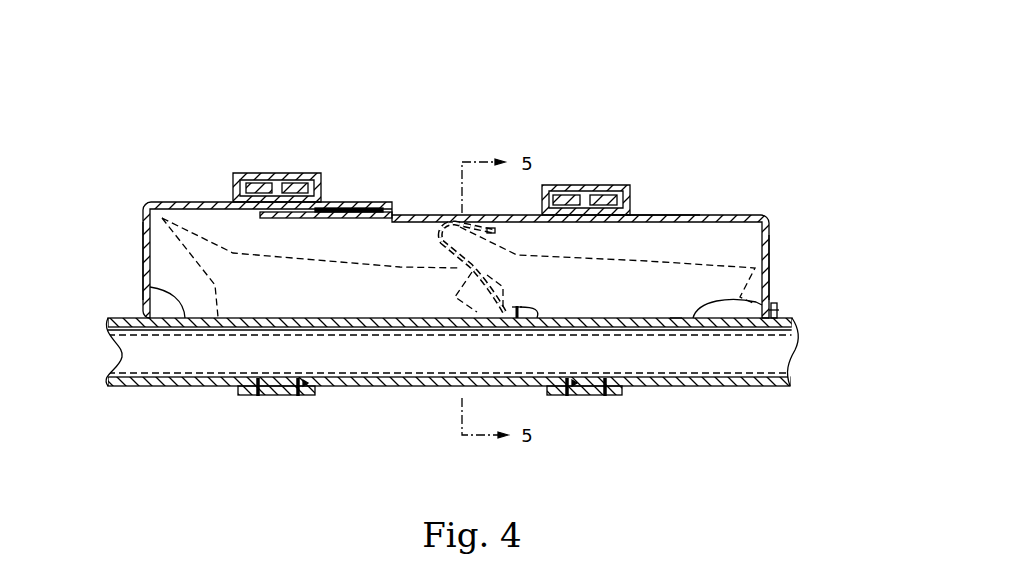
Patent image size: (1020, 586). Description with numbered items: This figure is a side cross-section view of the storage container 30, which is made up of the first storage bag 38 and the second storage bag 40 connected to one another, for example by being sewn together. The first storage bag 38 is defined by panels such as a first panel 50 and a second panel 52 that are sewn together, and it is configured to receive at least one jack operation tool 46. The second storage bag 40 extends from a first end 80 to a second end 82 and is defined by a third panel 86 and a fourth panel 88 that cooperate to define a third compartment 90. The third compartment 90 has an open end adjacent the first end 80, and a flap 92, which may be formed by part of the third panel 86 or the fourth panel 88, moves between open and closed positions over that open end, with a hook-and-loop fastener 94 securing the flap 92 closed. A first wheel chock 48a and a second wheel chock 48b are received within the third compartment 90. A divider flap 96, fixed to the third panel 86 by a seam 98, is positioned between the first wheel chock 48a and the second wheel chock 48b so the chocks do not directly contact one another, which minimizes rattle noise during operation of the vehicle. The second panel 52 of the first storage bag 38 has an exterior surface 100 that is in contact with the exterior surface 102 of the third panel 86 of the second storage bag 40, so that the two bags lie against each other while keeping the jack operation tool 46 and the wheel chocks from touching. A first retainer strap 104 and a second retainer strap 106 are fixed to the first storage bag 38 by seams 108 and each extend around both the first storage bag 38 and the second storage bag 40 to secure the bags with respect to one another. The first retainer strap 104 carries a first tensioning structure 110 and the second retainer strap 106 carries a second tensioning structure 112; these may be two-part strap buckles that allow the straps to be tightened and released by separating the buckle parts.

The storage container 30 is at (745, 114).
The first storage bag 38 is at (471, 396).
The second storage bag 40 is at (463, 231).
The jack operation tool 46 is at (773, 333).
The first wheel chock 48a is at (252, 253).
The second wheel chock 48b is at (647, 261).
The first panel 50 is at (380, 387).
The second panel 52 is at (778, 309).
The first end 80 is at (143, 230).
The second end 82 is at (768, 230).
The third panel 86 is at (150, 287).
The fourth panel 88 is at (700, 215).
The third compartment 90 is at (413, 237).
The flap 92 is at (374, 212).
The hook-and-loop fastener 94 is at (340, 206).
The divider flap 96 is at (481, 222).
The seam 98 is at (532, 320).
The exterior surface 100 is at (758, 303).
The exterior surface 102 is at (676, 320).
The first retainer strap 104 is at (251, 423).
The second retainer strap 106 is at (627, 395).
The seams 108 is at (267, 397).
The first tensioning structure 110 is at (280, 172).
The second tensioning structure 112 is at (598, 185).